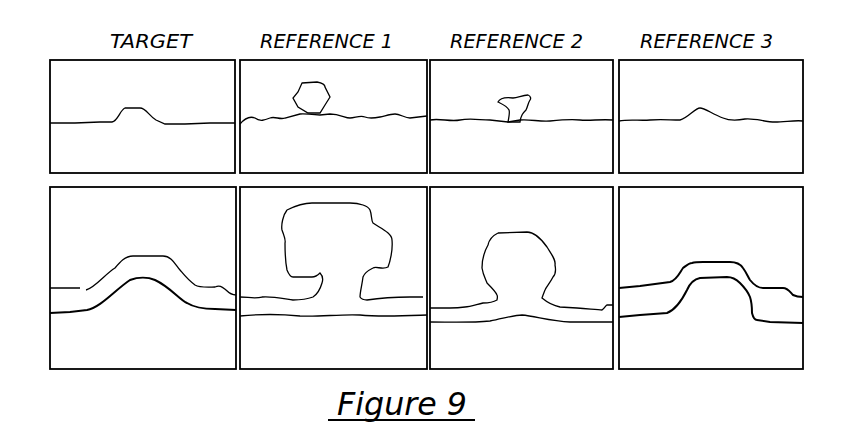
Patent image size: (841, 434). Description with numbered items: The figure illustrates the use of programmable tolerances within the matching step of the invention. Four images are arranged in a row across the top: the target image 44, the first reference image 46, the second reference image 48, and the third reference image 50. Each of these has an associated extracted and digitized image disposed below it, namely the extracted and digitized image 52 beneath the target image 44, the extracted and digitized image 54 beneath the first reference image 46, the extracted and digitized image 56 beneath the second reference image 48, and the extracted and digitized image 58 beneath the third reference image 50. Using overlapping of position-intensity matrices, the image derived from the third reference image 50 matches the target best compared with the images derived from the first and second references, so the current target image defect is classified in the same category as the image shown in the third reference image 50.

The target image 44 is at (83, 103).
The reference 1 image 46 is at (350, 93).
The reference 2 image 48 is at (528, 92).
The reference 3 image 50 is at (717, 103).
The extracted and digitized image 52 is at (72, 288).
The extracted and digitized image 54 is at (270, 240).
The extracted and digitized image 56 is at (517, 232).
The extracted and digitized image 58 is at (695, 263).